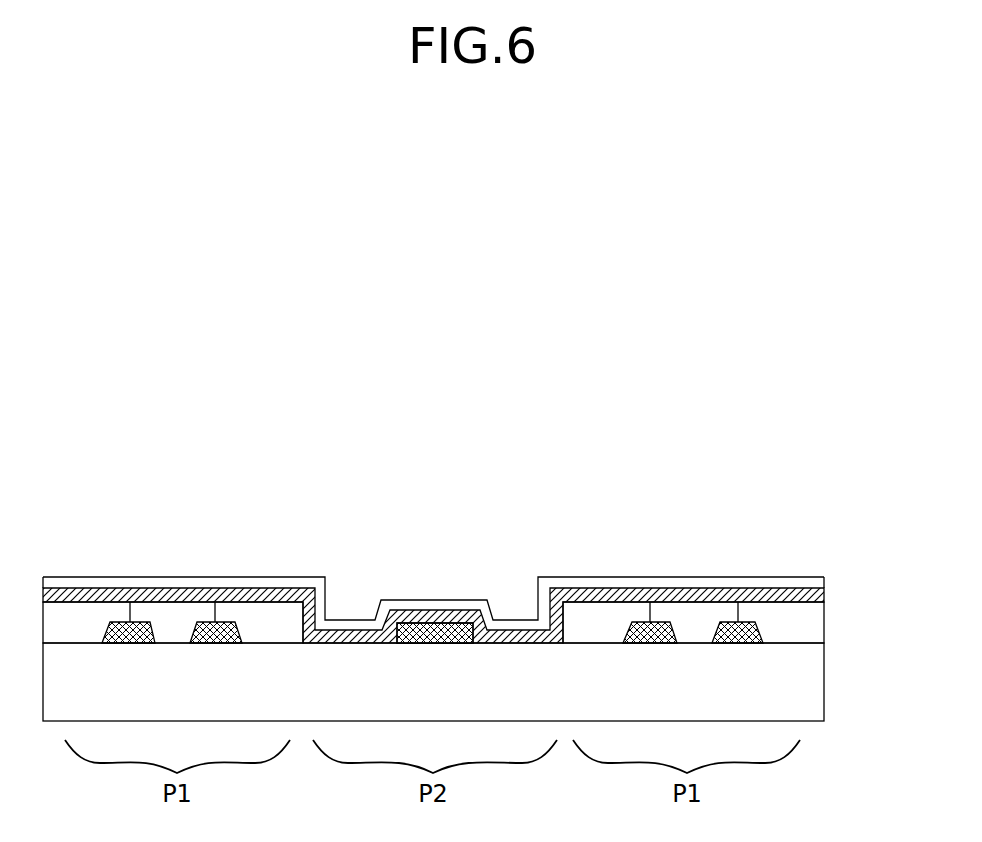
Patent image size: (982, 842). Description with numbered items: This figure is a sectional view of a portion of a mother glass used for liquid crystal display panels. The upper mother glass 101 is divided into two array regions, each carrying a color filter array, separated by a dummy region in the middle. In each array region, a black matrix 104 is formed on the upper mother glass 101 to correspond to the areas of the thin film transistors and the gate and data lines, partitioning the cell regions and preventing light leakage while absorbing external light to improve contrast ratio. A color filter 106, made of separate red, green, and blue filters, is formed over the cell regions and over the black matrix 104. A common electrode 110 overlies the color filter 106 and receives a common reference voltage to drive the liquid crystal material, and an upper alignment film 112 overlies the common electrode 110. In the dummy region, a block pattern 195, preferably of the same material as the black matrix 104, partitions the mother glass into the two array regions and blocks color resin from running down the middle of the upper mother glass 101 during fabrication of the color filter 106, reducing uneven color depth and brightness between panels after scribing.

The upper mother glass 101 is at (824, 686).
The black matrix 104 is at (745, 644).
The color filter 106 is at (824, 627).
The common electrode 110 is at (824, 596).
The upper alignment film 112 is at (761, 586).
The block pattern 195 is at (451, 624).